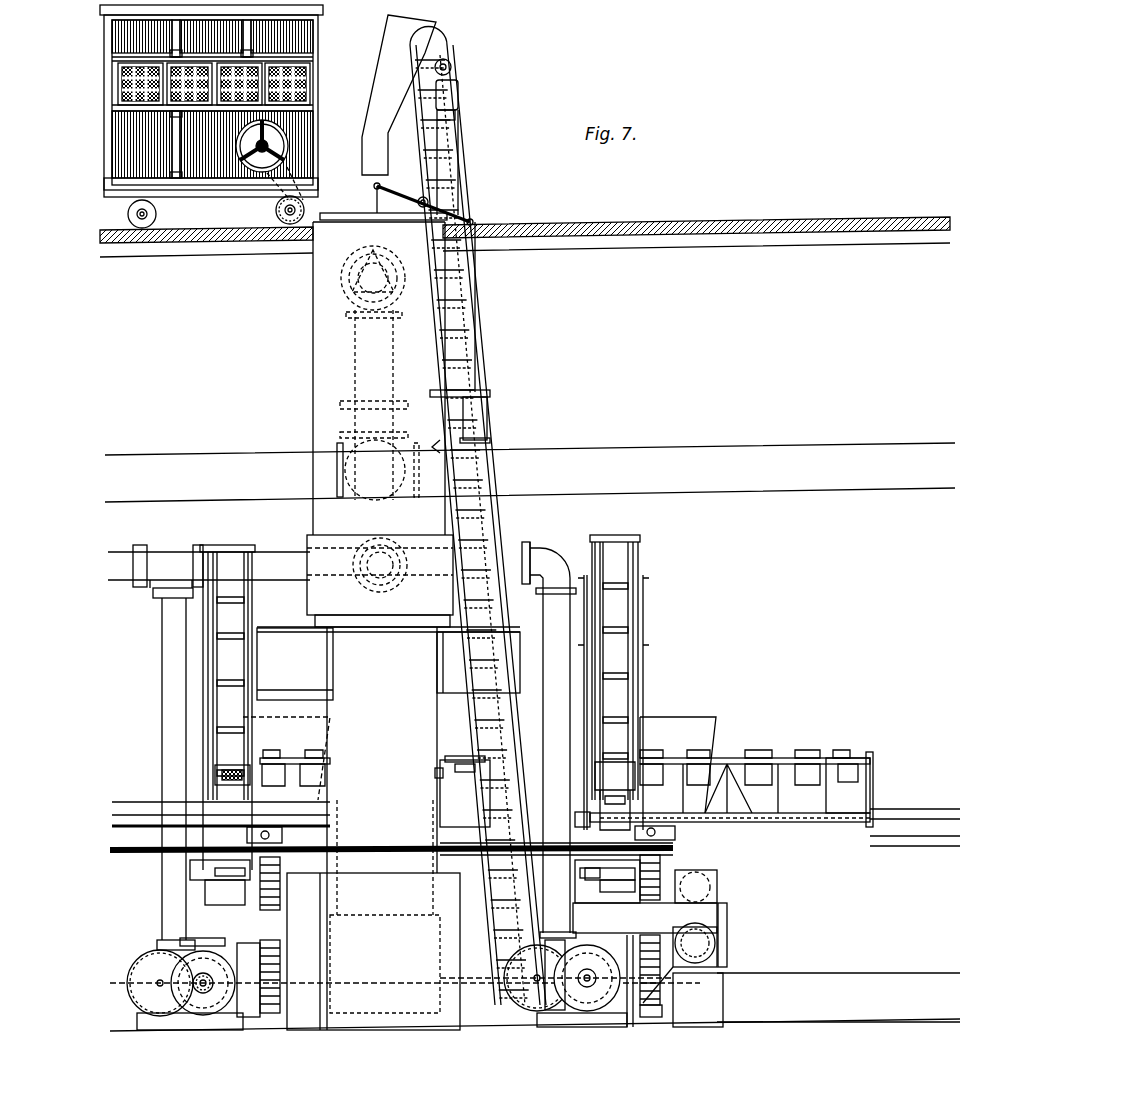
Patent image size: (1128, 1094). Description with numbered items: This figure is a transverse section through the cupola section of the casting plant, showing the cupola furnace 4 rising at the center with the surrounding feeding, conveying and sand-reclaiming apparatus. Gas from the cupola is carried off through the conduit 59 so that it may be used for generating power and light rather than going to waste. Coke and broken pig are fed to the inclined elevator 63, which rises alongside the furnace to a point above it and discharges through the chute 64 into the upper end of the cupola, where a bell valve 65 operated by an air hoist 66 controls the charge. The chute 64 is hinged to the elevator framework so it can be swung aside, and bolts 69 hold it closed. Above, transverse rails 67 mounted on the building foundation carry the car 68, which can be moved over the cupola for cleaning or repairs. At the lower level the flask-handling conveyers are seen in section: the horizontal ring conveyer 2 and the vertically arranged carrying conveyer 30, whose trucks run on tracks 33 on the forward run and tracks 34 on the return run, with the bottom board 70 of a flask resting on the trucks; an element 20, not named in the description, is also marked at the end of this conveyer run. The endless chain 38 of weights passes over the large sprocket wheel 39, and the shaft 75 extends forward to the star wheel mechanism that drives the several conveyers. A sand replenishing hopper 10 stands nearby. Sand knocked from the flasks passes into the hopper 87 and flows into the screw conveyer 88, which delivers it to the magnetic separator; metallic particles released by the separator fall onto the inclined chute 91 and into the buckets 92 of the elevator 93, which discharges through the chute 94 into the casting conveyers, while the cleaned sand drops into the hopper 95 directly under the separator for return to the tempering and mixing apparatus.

The horizontal conveyer 2 is at (440, 760).
The cupola furnace 4 is at (316, 406).
The sand replenishing hopper 10 is at (330, 737).
The end plate 20 is at (442, 771).
The vertically arranged conveyer 30 is at (235, 774).
The tracks 33 is at (245, 786).
The tracks 34 is at (200, 886).
The endless chain 38 is at (243, 537).
The sprocket wheel 39 is at (587, 880).
The conduit 59 is at (363, 364).
The inclined elevator 63 is at (505, 747).
The chute 64 is at (368, 139).
The bell valve 65 is at (366, 214).
The air hoist 66 is at (486, 418).
The transverse rails 67 is at (220, 116).
The car 68 is at (302, 130).
The bolts 69 is at (530, 472).
The bottom board 70 is at (858, 778).
The shaft 75 is at (283, 838).
The hopper 87 is at (212, 905).
The screw conveyer 88 is at (282, 926).
The inclined chute 91 is at (675, 999).
The buckets 92 is at (262, 910).
The elevator 93 is at (640, 913).
The chute 94 is at (617, 894).
The hopper 95 is at (712, 993).